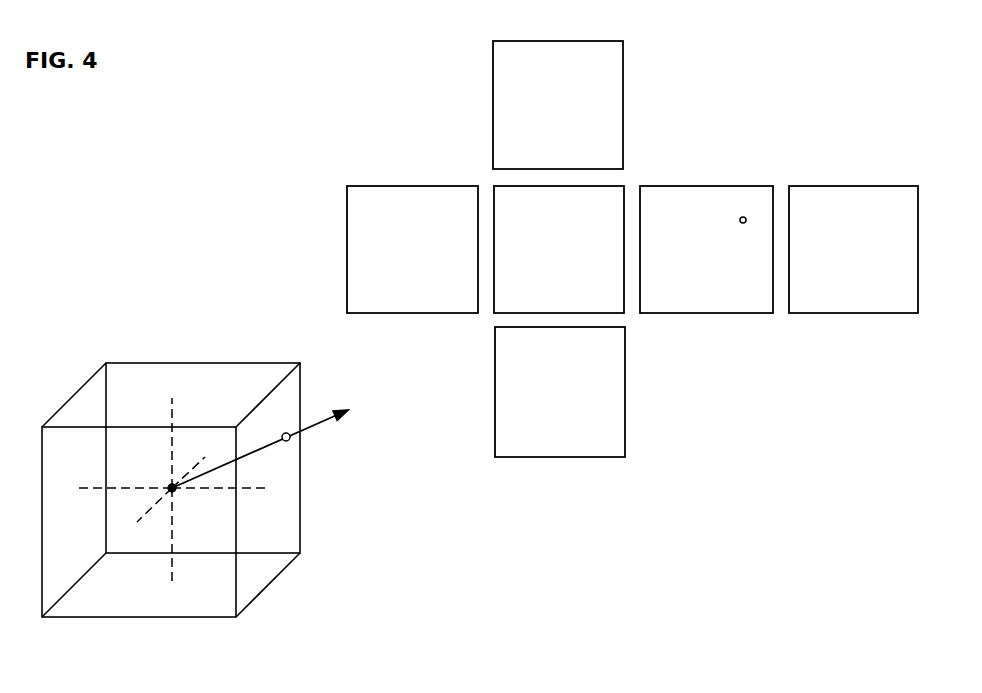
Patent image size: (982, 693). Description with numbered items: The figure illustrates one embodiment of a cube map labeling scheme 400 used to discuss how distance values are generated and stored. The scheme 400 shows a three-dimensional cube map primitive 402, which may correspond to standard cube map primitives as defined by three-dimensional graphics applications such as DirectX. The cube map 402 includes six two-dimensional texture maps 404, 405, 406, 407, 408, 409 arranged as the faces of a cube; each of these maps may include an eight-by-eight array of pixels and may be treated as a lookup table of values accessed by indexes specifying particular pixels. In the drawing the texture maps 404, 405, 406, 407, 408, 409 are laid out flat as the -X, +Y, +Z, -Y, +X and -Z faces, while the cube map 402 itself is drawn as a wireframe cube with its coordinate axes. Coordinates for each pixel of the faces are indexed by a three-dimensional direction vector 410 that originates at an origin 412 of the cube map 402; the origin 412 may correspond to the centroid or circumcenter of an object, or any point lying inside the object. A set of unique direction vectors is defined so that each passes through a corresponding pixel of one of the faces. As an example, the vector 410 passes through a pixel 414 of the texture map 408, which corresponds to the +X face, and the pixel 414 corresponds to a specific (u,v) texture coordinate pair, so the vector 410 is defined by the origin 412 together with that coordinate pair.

The cube map labeling scheme 400 is at (562, 610).
The 3D cube map primitive 402 is at (310, 253).
The 2D texture map 404 is at (431, 307).
The 2D texture map 405 is at (577, 162).
The 2D texture map 406 is at (577, 307).
The 2D texture map 407 is at (578, 451).
The 2D texture map 408 is at (727, 307).
The 2D texture map 409 is at (871, 307).
The 3D direction vector 410 is at (315, 426).
The origin 412 is at (172, 488).
The pixel 414 is at (289, 433).